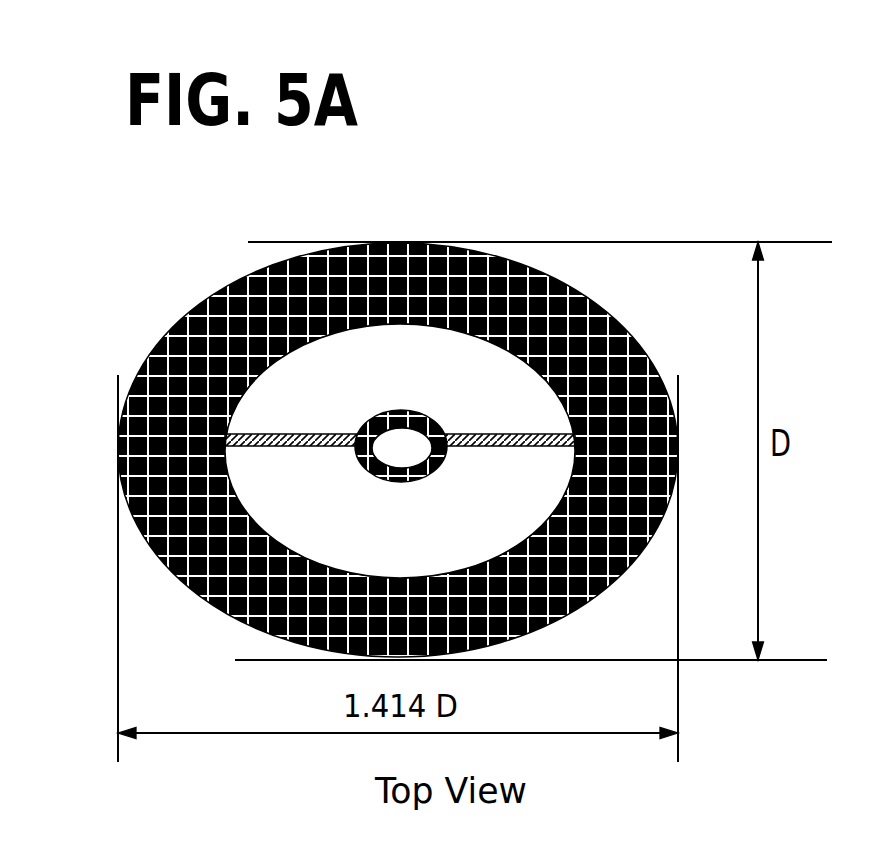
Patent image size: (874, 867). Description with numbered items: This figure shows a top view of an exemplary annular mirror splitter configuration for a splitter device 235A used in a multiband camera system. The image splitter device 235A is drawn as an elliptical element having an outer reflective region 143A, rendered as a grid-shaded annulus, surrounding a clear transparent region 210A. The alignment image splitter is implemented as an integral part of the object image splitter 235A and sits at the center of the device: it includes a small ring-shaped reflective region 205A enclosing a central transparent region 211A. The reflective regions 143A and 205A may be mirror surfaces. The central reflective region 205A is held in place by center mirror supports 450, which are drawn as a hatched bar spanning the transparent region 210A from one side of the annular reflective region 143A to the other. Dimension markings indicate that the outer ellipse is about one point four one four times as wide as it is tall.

The splitter device 235A is at (628, 318).
The reflective region 143A is at (236, 303).
The transparent region 210A is at (357, 360).
The reflective region 205A is at (440, 404).
The transparent region 211A is at (411, 440).
The center mirror supports 450 is at (515, 452).